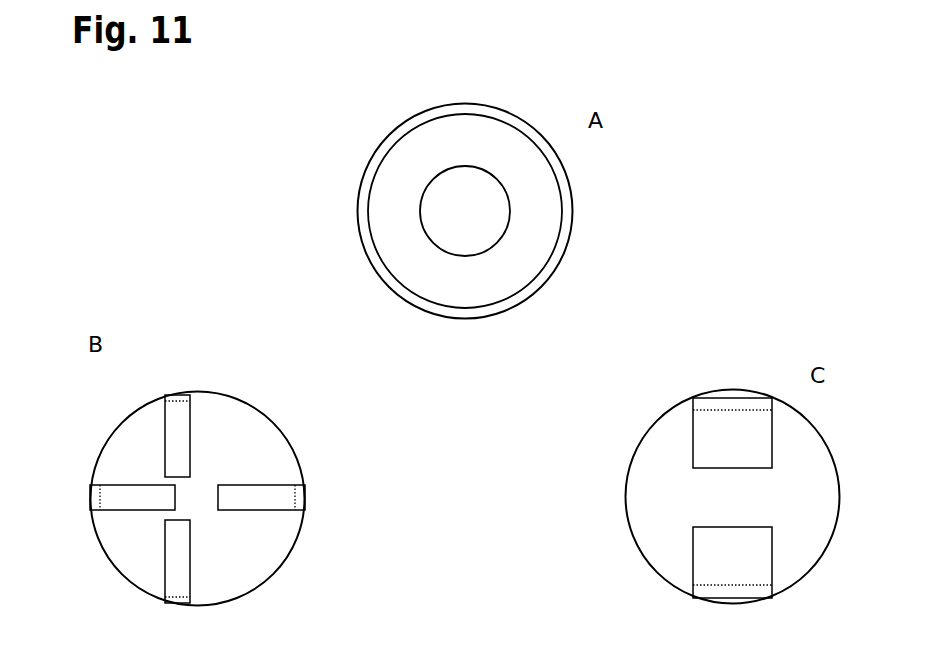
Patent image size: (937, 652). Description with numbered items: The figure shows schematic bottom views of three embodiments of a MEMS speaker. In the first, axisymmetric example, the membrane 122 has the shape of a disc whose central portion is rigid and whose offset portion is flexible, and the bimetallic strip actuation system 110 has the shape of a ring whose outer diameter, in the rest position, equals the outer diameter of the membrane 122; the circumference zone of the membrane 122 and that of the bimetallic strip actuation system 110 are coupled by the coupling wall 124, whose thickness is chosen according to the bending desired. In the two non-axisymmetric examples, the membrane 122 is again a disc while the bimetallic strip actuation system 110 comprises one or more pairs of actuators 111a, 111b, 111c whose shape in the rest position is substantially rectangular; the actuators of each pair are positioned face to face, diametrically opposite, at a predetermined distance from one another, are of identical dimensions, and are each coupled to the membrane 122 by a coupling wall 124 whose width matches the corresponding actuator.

The bimetallic strip actuation system 110 is at (408, 150).
The membrane 122 is at (358, 190).
The coupling wall 124 is at (375, 252).
The pair of actuators 111a is at (260, 483).
The pair of actuators 111b is at (212, 438).
The pair of actuators 111c is at (692, 443).